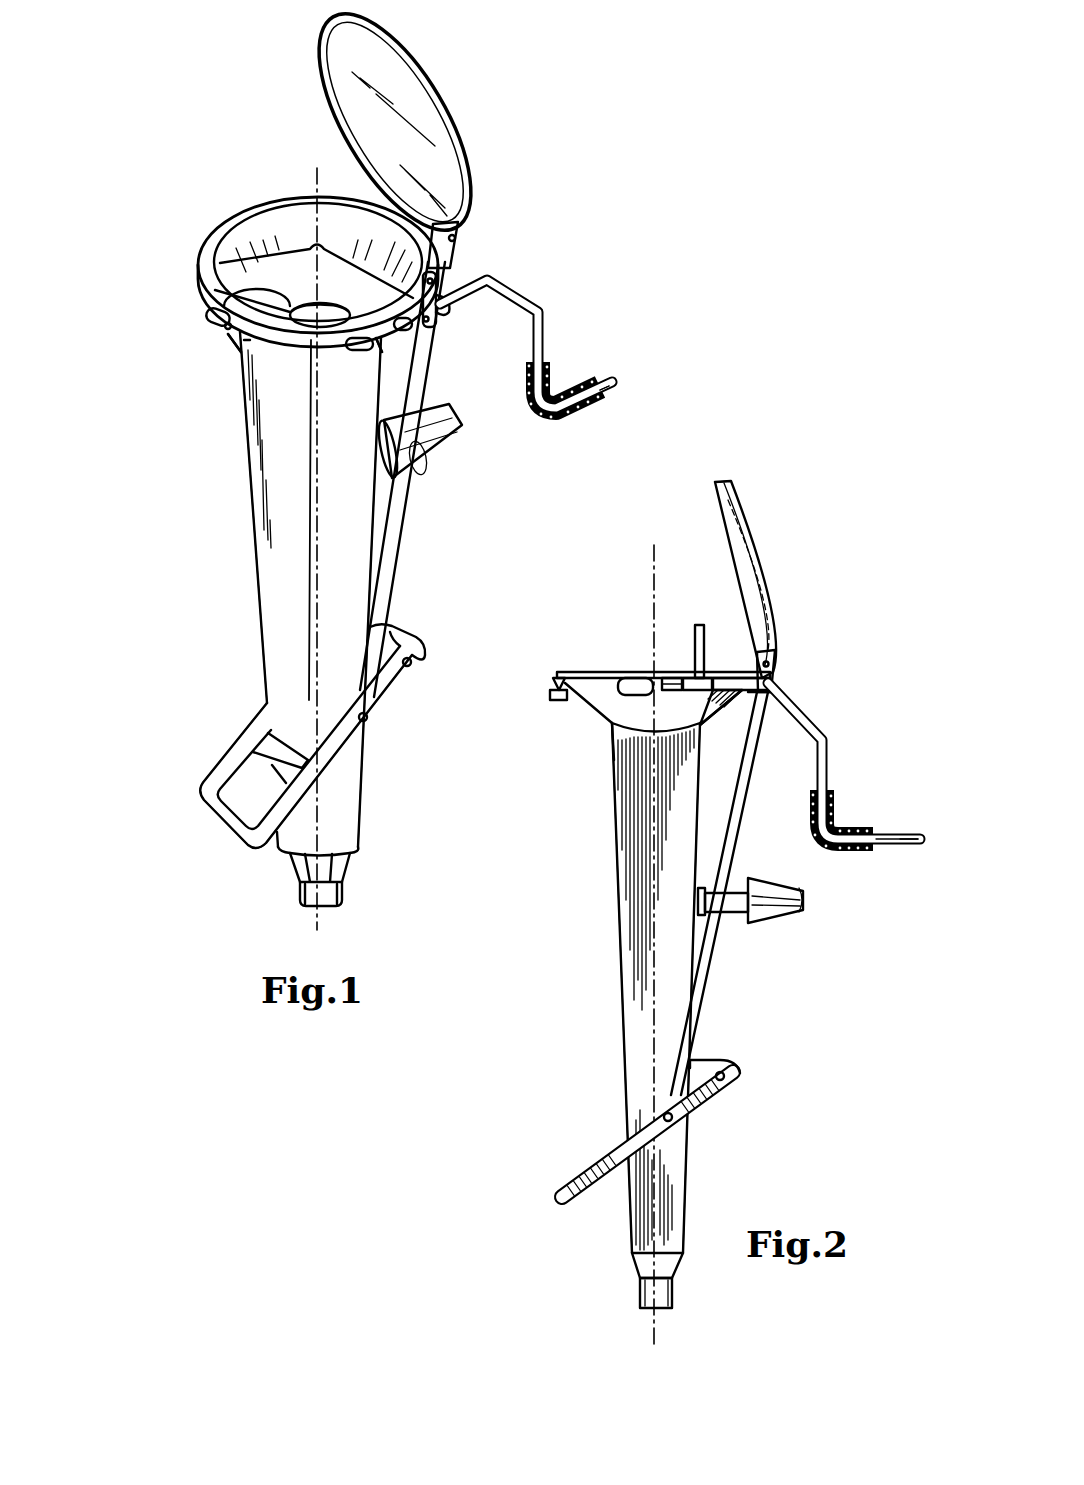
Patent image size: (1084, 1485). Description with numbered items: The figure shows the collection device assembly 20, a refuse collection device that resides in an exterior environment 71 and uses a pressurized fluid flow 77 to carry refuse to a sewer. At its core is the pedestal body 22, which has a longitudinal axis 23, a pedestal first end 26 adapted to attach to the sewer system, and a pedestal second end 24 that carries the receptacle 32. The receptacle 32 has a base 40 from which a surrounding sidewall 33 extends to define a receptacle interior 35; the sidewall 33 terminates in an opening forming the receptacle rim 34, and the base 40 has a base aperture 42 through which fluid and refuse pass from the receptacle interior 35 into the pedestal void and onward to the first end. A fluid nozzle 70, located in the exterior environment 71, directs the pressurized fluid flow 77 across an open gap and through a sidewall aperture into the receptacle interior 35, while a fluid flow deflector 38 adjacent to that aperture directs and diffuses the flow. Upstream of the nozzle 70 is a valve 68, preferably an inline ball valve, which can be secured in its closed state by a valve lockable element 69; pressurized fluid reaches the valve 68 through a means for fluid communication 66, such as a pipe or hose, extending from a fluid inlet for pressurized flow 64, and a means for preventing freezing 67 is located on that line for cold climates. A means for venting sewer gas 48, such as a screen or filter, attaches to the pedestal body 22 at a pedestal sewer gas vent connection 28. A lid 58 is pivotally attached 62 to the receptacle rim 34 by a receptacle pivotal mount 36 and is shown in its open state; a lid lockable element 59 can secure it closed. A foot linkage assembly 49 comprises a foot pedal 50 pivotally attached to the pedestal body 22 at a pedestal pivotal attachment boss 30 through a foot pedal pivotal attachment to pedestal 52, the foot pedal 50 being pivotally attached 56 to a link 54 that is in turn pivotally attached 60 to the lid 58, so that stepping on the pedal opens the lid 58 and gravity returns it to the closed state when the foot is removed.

In FIG. 1, the collection device assembly 20 is at (165, 78).
In FIG. 2, the collection device assembly 20 is at (645, 512).
In FIG. 1, the pedestal body 22 is at (275, 555).
In FIG. 2, the pedestal body 22 is at (625, 853).
In FIG. 1, the longitudinal axis 23 is at (316, 168).
In FIG. 2, the longitudinal axis 23 is at (652, 558).
In FIG. 1, the pedestal second end 24 is at (262, 345).
In FIG. 2, the pedestal second end 24 is at (612, 748).
In FIG. 1, the pedestal first end 26 is at (302, 903).
In FIG. 2, the pedestal first end 26 is at (640, 1305).
In FIG. 2, the pedestal sewer gas vent connection 28 is at (698, 903).
In FIG. 1, the pedestal pivotal attachment boss 30 is at (398, 630).
In FIG. 2, the pedestal pivotal attachment boss 30 is at (733, 1094).
In FIG. 1, the receptacle 32 is at (160, 221).
In FIG. 2, the receptacle 32 is at (535, 706).
In FIG. 1, the sidewall 33 is at (215, 252).
In FIG. 2, the sidewall 33 is at (590, 710).
In FIG. 1, the receptacle rim 34 is at (225, 218).
In FIG. 2, the receptacle rim 34 is at (565, 672).
In FIG. 1, the receptacle interior 35 is at (347, 242).
In FIG. 1, the receptacle pivotal mount 36 is at (430, 215).
In FIG. 2, the receptacle pivotal mount 36 is at (772, 682).
In FIG. 1, the fluid flow deflector 38 is at (352, 352).
In FIG. 2, the fluid flow deflector 38 is at (640, 683).
In FIG. 1, the base 40 is at (303, 290).
In FIG. 1, the base aperture 42 is at (215, 290).
In FIG. 1, the means for venting sewer gas 48 is at (445, 458).
In FIG. 2, the means for venting sewer gas 48 is at (775, 920).
In FIG. 1, the foot linkage assembly 49 is at (200, 850).
In FIG. 2, the foot linkage assembly 49 is at (548, 1206).
In FIG. 1, the foot pedal 50 is at (202, 778).
In FIG. 2, the foot pedal 50 is at (592, 1165).
In FIG. 1, the foot pedal pivotal attachment to pedestal 52 is at (412, 665).
In FIG. 2, the foot pedal pivotal attachment to pedestal 52 is at (735, 1073).
In FIG. 1, the link 54 is at (400, 535).
In FIG. 2, the link 54 is at (708, 967).
In FIG. 1, the pivotal attachment of foot pedal to link 56 is at (370, 720).
In FIG. 2, the pivotal attachment of foot pedal to link 56 is at (678, 1120).
In FIG. 1, the lid 58 is at (437, 88).
In FIG. 2, the lid 58 is at (745, 505).
In FIG. 1, the lid lockable element 59 is at (220, 325).
In FIG. 2, the lid lockable element 59 is at (555, 682).
In FIG. 1, the pivotal attachment of link to lid 60 is at (456, 236).
In FIG. 2, the pivotal attachment of lid 62 is at (765, 673).
In FIG. 1, the fluid inlet for pressurized flow 64 is at (614, 382).
In FIG. 2, the fluid inlet for pressurized flow 64 is at (925, 850).
In FIG. 1, the means for fluid communication 66 is at (544, 333).
In FIG. 2, the means for fluid communication 66 is at (822, 762).
In FIG. 1, the means for preventing freezing of the pressurized fluid flow 67 is at (530, 395).
In FIG. 2, the means for preventing freezing of the pressurized fluid flow 67 is at (812, 835).
In FIG. 1, the valve 68 is at (438, 312).
In FIG. 2, the valve 68 is at (725, 712).
In FIG. 1, the valve lockable element 69 is at (440, 290).
In FIG. 2, the valve lockable element 69 is at (702, 660).
In FIG. 1, the fluid nozzle 70 is at (410, 342).
In FIG. 2, the fluid nozzle 70 is at (672, 683).
In FIG. 1, the exterior environment 71 is at (478, 465).
In FIG. 2, the exterior environment 71 is at (822, 892).
In FIG. 1, the pressurized fluid flow 77 is at (628, 372).
In FIG. 2, the pressurized fluid flow 77 is at (928, 825).